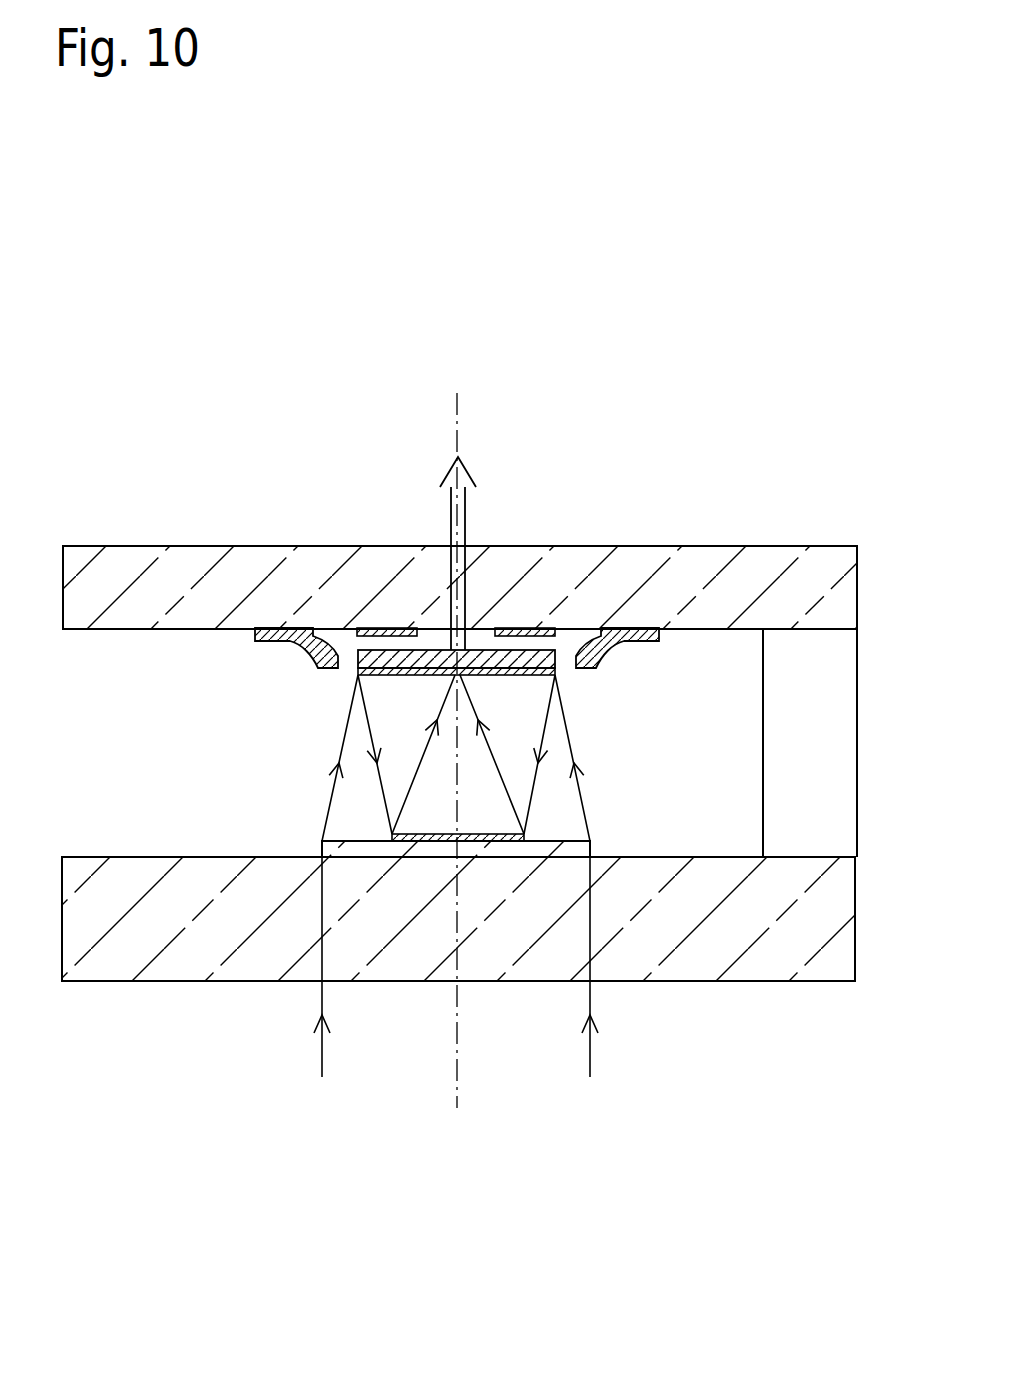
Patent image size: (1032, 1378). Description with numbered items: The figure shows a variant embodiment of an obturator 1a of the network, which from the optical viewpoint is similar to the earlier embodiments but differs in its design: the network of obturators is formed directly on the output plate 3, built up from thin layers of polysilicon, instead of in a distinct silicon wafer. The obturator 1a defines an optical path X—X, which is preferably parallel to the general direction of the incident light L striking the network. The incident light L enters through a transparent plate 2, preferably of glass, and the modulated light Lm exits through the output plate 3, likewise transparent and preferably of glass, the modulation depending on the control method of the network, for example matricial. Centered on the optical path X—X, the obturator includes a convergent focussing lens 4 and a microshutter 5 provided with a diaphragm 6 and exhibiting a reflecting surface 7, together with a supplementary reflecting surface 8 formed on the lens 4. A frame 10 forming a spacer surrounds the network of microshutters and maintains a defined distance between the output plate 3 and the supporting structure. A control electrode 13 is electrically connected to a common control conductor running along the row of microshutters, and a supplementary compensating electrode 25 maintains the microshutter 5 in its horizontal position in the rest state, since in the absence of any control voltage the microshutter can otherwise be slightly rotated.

The obturator 1a is at (423, 576).
The transparent plate 2 is at (700, 962).
The output plate 3 is at (700, 546).
The convergent focussing lens 4 is at (524, 843).
The microshutter 5 is at (536, 693).
The diaphragm 6 is at (447, 688).
The reflecting surface 7 is at (520, 676).
The supplementary reflecting surface 8 is at (422, 843).
The frame 10 is at (840, 652).
The control electrode 13 is at (548, 628).
The compensating electrode 25 is at (385, 628).
The incident light L is at (491, 983).
The modulated light Lm is at (462, 522).
The optical path X is at (470, 752).